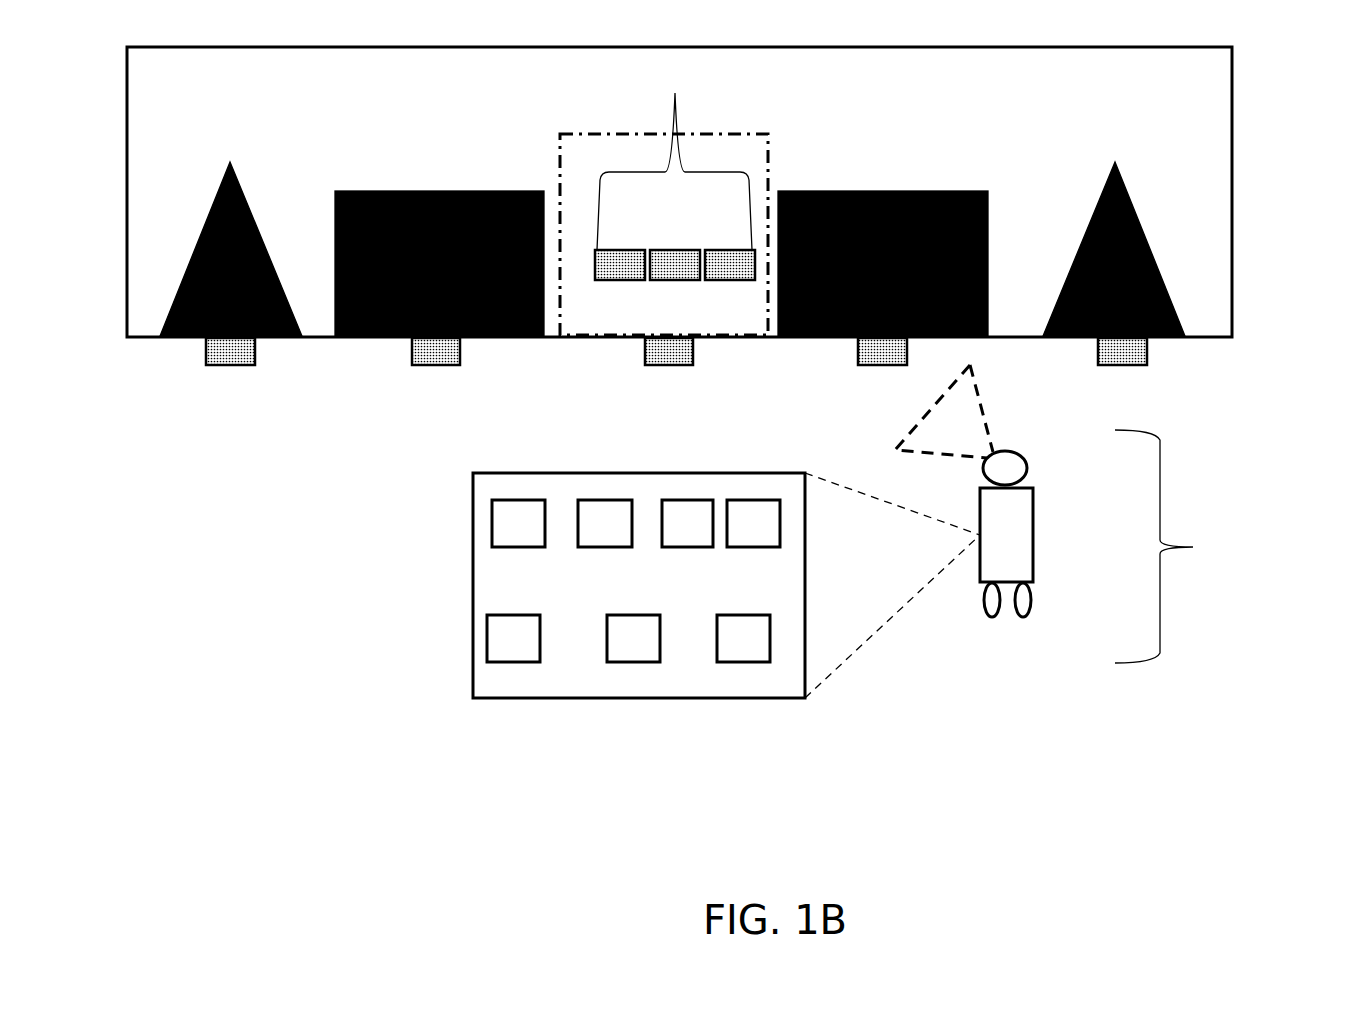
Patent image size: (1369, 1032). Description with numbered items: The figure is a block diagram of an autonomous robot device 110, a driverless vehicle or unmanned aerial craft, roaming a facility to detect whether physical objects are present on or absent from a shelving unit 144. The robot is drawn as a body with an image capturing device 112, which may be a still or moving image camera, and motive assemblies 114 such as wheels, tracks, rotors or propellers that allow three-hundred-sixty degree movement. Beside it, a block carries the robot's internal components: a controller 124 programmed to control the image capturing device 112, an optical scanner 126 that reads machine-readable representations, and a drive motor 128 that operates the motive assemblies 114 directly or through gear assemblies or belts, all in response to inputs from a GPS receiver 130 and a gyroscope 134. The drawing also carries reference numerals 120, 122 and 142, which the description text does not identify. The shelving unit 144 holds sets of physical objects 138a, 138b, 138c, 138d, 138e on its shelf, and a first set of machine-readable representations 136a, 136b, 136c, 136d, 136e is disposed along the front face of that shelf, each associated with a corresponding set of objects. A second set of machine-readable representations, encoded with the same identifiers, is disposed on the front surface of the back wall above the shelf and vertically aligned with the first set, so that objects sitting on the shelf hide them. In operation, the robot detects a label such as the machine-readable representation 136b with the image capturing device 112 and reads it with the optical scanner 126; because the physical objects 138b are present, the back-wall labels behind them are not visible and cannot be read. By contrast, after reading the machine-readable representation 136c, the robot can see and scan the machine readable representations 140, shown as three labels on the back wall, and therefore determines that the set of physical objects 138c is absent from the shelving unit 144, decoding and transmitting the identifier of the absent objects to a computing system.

The autonomous robot device 110 is at (1066, 523).
The image capturing device 112 is at (1027, 468).
The motive assemblies 114 is at (1033, 598).
The input device 120 is at (753, 663).
The input button 122 is at (635, 663).
The controller 124 is at (487, 637).
The optical scanner 126 is at (492, 523).
The drive motor 128 is at (603, 502).
The GPS receiver 130 is at (688, 502).
The gyroscope 134 is at (755, 500).
The machine-readable representation 136a is at (230, 367).
The machine-readable representation 136b is at (422, 370).
The machine-readable representation 136c is at (667, 366).
The machine-readable representation 136d is at (893, 366).
The machine-readable representation 136e is at (1127, 367).
The physical objects 138a is at (265, 250).
The physical objects 138b is at (442, 192).
The physical objects 138c is at (764, 133).
The physical objects 138d is at (885, 192).
The physical objects 138e is at (1117, 158).
The machine readable representations 140 is at (675, 173).
The display 142 is at (1015, 65).
The shelving unit 144 is at (1193, 170).